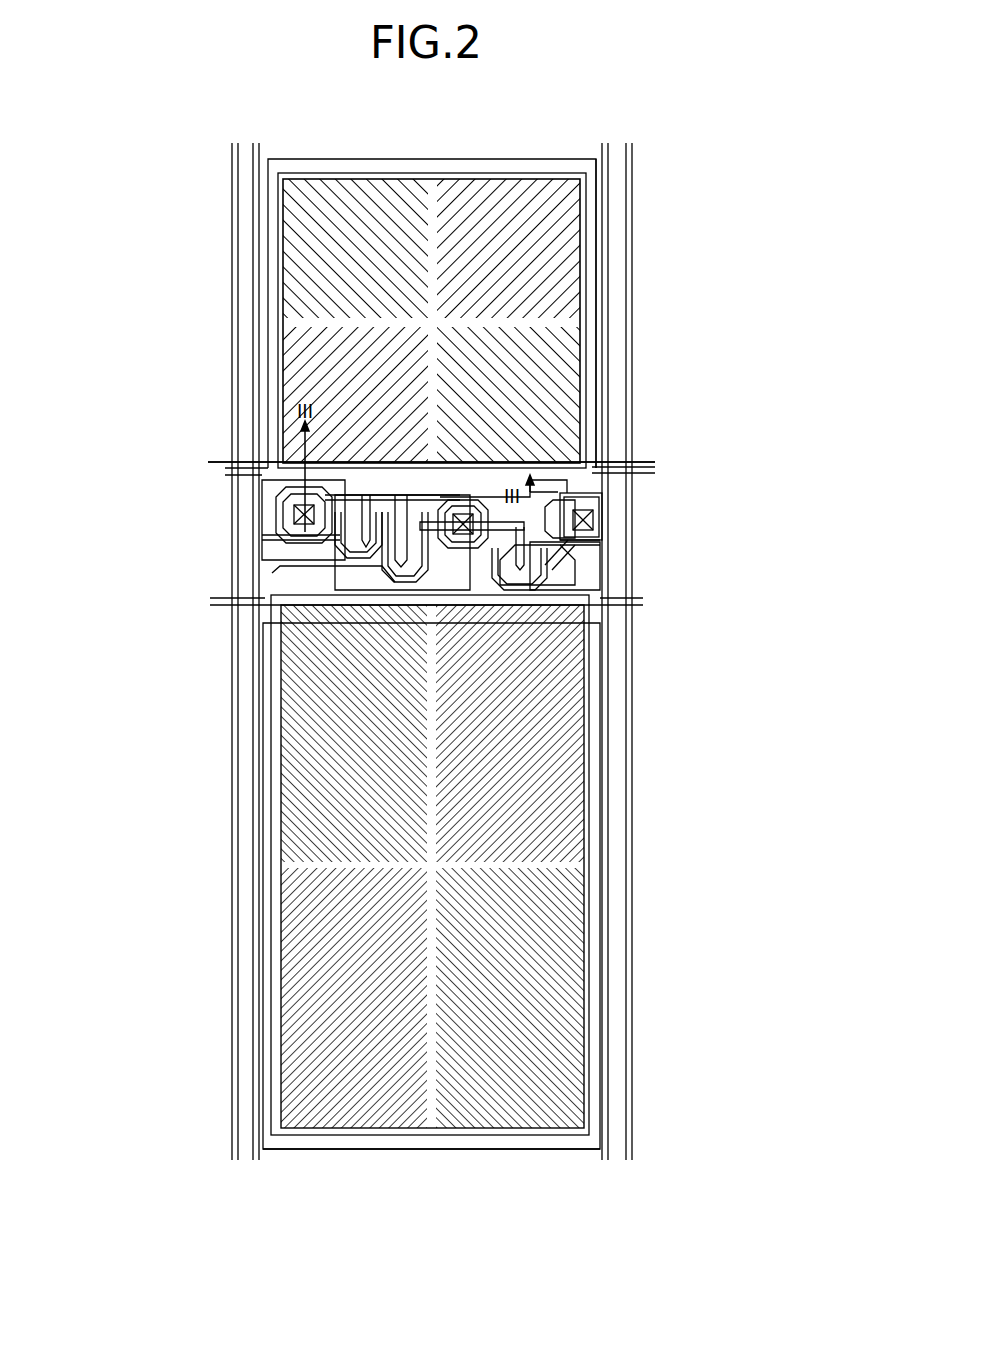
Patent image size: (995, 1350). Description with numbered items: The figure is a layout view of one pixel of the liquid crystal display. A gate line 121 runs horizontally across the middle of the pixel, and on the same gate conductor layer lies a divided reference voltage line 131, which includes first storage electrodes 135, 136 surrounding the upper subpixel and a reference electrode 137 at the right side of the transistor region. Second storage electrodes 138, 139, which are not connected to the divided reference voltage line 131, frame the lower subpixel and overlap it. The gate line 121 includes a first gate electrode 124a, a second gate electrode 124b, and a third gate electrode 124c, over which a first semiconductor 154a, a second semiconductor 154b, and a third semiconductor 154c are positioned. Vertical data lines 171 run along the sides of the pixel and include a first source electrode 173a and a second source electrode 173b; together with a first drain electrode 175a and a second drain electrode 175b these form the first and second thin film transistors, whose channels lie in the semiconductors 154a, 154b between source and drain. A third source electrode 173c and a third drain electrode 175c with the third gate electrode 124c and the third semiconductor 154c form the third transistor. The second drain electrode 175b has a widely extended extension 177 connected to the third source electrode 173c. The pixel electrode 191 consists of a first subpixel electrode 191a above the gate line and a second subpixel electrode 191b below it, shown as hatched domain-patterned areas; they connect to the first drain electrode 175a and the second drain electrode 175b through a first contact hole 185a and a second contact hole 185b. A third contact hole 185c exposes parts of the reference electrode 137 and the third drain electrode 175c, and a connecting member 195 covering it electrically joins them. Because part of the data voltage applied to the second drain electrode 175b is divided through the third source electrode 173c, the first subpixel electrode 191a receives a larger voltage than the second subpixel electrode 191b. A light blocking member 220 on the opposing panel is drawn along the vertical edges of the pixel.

The data line 171 is at (257, 192).
The light blocking member 220 is at (633, 255).
The gate line 121 is at (233, 580).
The first storage electrode 136 is at (380, 159).
The first storage electrode 135 is at (597, 340).
The first subpixel electrode 191a is at (278, 297).
The second subpixel electrode 191b is at (278, 776).
The pixel electrode 191 is at (727, 1022).
The second storage electrode 138 is at (601, 893).
The second storage electrode 139 is at (533, 1149).
The divided reference voltage line 131 is at (635, 478).
The first gate electrode 124a is at (270, 465).
The second gate electrode 124b is at (440, 498).
The third gate electrode 124c is at (575, 575).
The first semiconductor 154a is at (388, 515).
The second semiconductor 154b is at (495, 550).
The third semiconductor 154c is at (520, 587).
The first source electrode 173a is at (337, 535).
The second source electrode 173b is at (505, 568).
The third source electrode 173c is at (572, 548).
The first drain electrode 175a is at (280, 500).
The second drain electrode 175b is at (430, 556).
The third drain electrode 175c is at (535, 580).
The first contact hole 185a is at (294, 515).
The second contact hole 185b is at (470, 516).
The third contact hole 185c is at (594, 520).
The extension 177 is at (545, 485).
The connecting member 195 is at (600, 534).
The reference electrode 137 is at (603, 497).